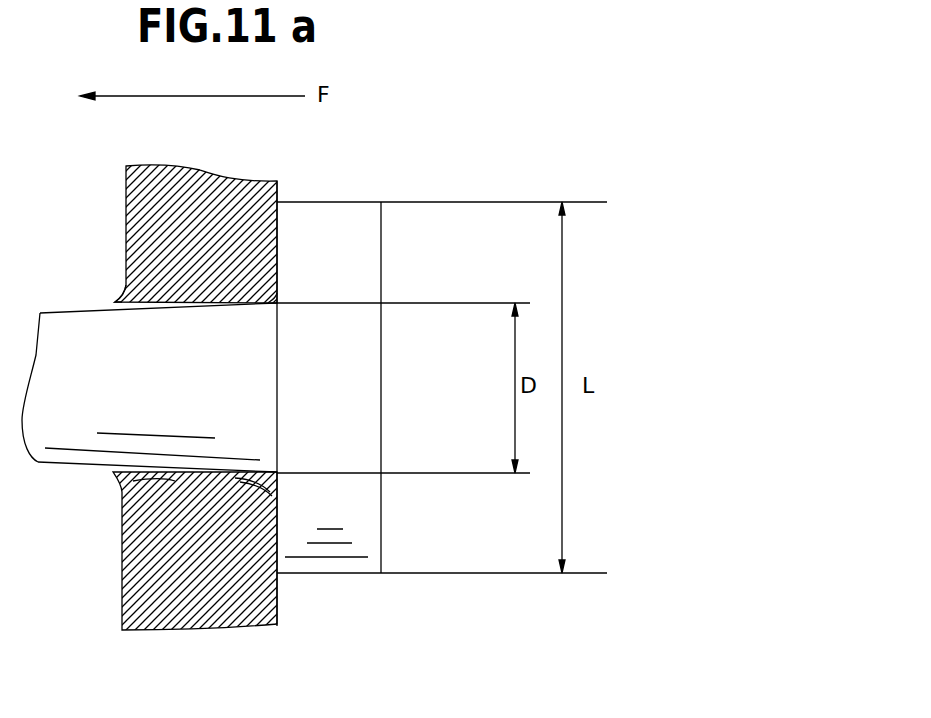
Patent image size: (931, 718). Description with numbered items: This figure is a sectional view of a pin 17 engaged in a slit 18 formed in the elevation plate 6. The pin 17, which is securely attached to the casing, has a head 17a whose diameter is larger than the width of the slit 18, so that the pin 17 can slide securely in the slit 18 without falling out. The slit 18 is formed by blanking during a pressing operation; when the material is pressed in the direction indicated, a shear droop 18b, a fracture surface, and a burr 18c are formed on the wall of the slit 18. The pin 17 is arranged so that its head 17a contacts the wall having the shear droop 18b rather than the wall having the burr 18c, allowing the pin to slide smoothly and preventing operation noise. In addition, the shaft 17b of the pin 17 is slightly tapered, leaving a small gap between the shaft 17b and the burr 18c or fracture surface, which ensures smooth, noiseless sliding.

The elevation plate 6 is at (191, 376).
The pin 17 is at (276, 403).
The head 17a is at (355, 330).
The shaft 17b is at (80, 332).
The slit 18 is at (277, 293).
The shear droop 18b is at (270, 478).
The burr 18c is at (119, 298).